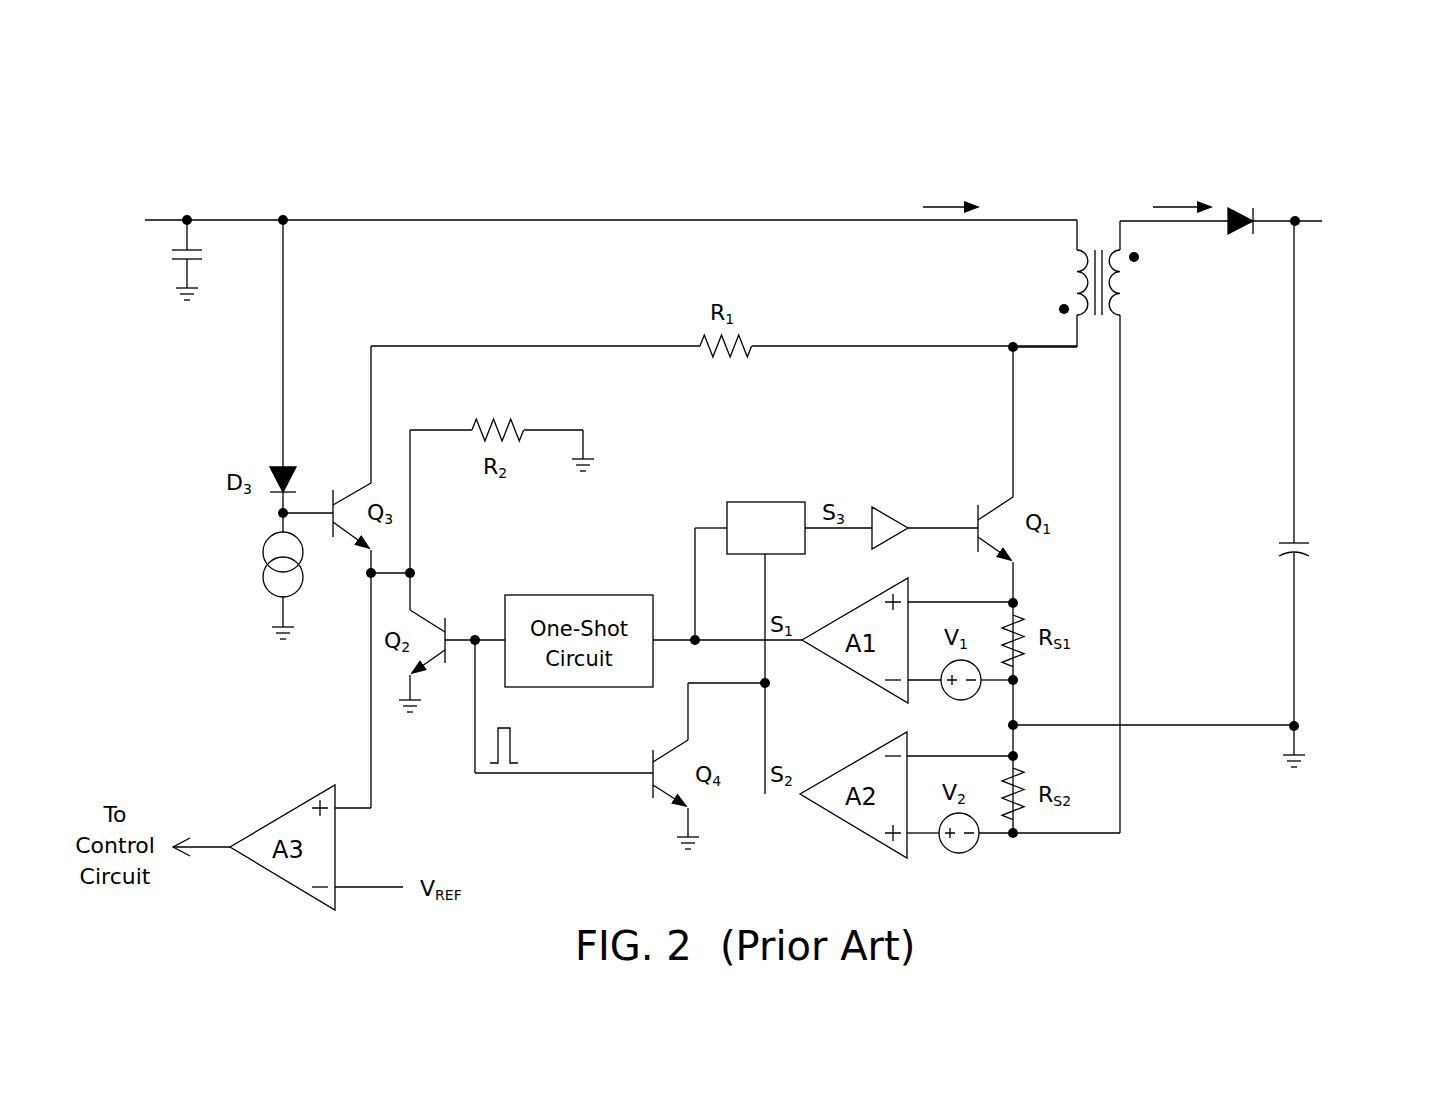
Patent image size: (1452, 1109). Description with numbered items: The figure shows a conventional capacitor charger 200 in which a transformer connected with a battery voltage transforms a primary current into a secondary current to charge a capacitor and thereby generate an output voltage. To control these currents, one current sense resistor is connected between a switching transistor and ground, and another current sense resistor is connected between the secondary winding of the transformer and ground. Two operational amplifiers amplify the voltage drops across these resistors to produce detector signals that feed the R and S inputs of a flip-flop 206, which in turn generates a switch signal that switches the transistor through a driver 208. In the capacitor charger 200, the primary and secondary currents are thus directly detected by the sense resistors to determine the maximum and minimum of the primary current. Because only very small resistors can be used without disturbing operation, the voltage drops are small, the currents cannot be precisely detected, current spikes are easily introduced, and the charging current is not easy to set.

The capacitor charger 200 is at (1308, 167).
The flip-flop 206 is at (765, 502).
The driver 208 is at (893, 510).